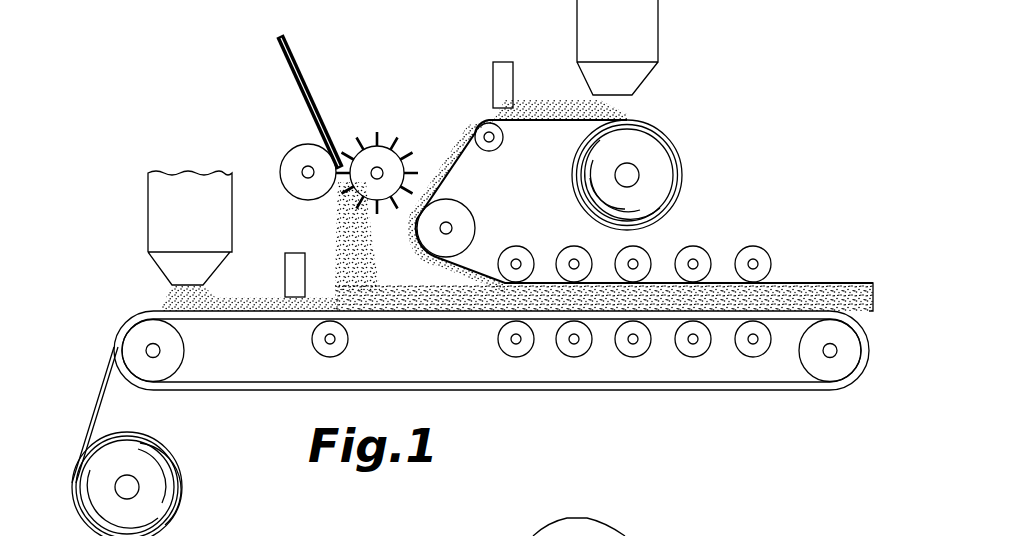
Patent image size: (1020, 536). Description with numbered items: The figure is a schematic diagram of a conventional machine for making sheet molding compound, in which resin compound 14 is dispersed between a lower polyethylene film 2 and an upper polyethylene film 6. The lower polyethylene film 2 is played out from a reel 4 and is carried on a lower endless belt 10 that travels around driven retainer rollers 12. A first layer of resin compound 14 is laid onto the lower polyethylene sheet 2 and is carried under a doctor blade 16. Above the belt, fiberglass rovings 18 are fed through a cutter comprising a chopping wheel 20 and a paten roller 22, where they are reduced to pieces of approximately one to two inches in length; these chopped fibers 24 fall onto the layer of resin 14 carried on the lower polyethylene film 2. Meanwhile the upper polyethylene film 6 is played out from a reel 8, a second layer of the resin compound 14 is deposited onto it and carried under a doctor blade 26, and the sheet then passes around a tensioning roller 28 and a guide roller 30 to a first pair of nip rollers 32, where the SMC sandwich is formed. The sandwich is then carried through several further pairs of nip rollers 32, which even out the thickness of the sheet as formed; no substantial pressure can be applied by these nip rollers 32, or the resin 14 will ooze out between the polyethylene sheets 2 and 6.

The lower polyethylene film 2 is at (90, 410).
The reel 4 is at (139, 486).
The upper polyethylene film 6 is at (640, 130).
The reel 8 is at (634, 173).
The lower endless belt 10 is at (172, 385).
The driven retainer rollers 12 is at (165, 350).
The resin compound 14 is at (263, 297).
The doctor blade 16 is at (295, 265).
The fiberglass rovings 18 is at (318, 102).
The chopping wheel 20 is at (382, 153).
The paten roller 22 is at (292, 158).
The chopped fibers 24 is at (368, 288).
The doctor blade 26 is at (503, 72).
The tensioning roller 28 is at (502, 140).
The guide roller 30 is at (460, 233).
The nip rollers 32 is at (618, 262).